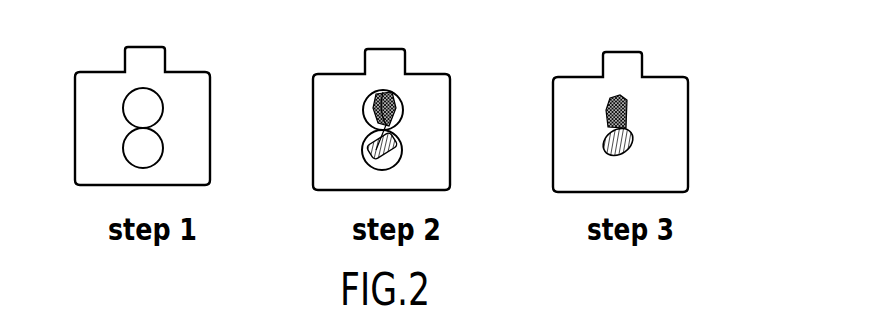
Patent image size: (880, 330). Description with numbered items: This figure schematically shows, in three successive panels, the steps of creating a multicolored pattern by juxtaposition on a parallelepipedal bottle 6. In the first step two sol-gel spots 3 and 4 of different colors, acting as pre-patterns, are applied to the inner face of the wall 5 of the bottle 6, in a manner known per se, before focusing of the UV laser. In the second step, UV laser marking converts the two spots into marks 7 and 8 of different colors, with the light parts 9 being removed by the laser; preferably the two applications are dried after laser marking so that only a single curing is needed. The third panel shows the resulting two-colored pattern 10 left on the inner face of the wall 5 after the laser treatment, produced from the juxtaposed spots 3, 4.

The spot 3 is at (155, 105).
The spot 4 is at (150, 152).
The wall 5 is at (92, 115).
The parallelepipedal bottle 6 is at (362, 96).
The mark 7 is at (398, 103).
The mark 8 is at (397, 141).
The light parts 9 is at (384, 100).
The combined seal assembly 10 is at (650, 130).